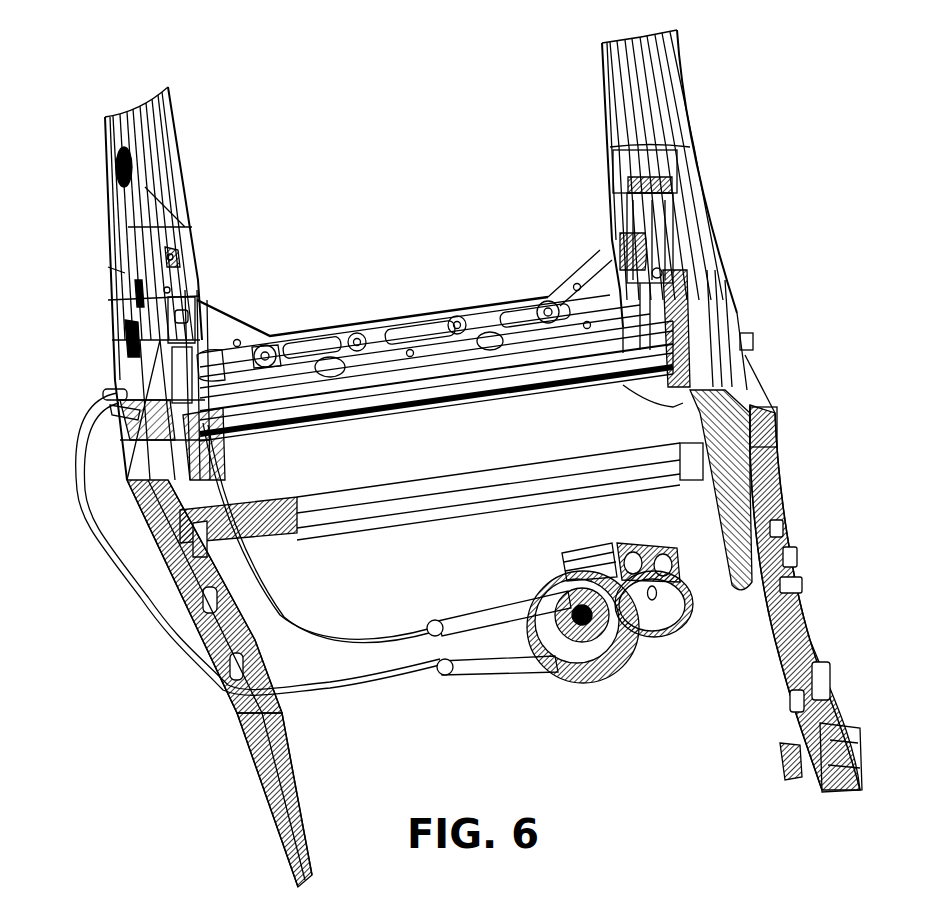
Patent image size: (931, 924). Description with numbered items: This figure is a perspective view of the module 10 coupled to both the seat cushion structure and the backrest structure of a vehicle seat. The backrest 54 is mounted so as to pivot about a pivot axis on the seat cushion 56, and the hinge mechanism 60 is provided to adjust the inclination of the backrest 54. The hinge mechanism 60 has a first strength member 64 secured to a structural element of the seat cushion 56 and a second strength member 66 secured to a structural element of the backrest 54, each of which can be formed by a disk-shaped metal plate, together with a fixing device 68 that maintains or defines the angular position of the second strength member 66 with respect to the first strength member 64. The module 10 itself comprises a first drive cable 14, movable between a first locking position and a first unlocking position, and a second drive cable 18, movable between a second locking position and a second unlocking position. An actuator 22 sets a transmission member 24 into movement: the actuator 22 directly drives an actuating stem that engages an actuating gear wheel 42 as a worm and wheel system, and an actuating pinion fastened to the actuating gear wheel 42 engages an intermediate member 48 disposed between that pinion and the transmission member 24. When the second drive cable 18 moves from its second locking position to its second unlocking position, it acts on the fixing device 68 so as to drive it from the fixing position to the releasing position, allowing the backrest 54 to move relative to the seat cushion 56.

The module 10 is at (571, 627).
The first drive cable 14 is at (474, 620).
The second drive cable 18 is at (480, 672).
The actuator 22 is at (572, 558).
The transmission member 24 is at (556, 676).
The actuating gear wheel 42 is at (663, 557).
The intermediate member 48 is at (665, 615).
The backrest 54 is at (163, 155).
The seat cushion 56 is at (190, 607).
The hinge mechanism 60 is at (113, 470).
The first strength member 64 is at (262, 546).
The second strength member 66 is at (77, 511).
The fixing device 68 is at (125, 412).